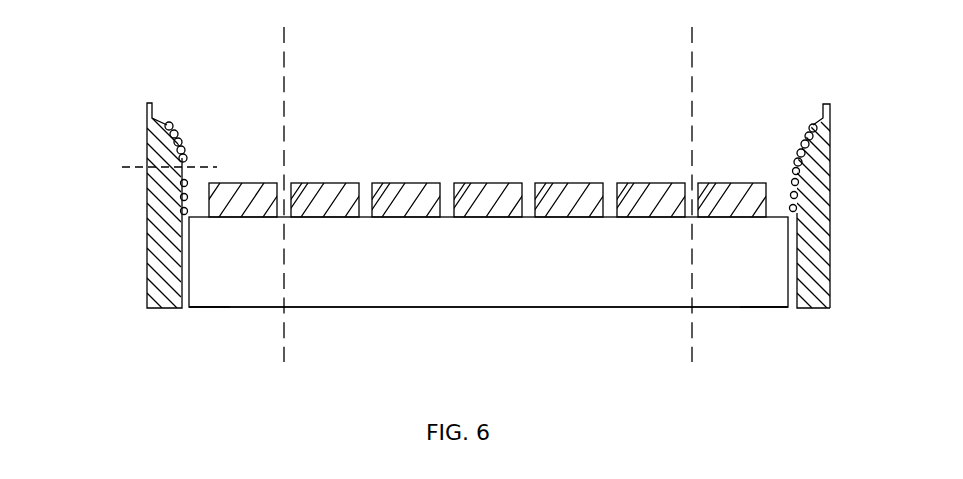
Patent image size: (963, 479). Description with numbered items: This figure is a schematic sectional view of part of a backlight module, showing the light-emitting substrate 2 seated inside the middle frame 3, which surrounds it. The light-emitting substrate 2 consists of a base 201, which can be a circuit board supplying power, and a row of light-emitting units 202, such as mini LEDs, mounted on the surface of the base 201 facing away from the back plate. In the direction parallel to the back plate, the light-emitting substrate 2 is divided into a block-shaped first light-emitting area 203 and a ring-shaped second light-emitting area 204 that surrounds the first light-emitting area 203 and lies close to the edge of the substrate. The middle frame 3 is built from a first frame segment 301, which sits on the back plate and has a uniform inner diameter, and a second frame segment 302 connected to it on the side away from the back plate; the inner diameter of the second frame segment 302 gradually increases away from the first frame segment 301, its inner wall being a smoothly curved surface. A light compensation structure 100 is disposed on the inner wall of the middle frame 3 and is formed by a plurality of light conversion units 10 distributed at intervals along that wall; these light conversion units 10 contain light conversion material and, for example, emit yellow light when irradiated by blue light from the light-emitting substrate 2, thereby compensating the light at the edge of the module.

The light-emitting substrate 2 is at (486, 223).
The middle frame 3 is at (454, 199).
The light conversion unit 10 is at (524, 164).
The light compensation structure 100 is at (188, 155).
The base 201 is at (482, 246).
The light-emitting unit 202 is at (337, 193).
The first light-emitting area 203 is at (550, 314).
The second light-emitting area 204 is at (212, 314).
The first frame segment 301 is at (142, 225).
The second frame segment 302 is at (142, 138).